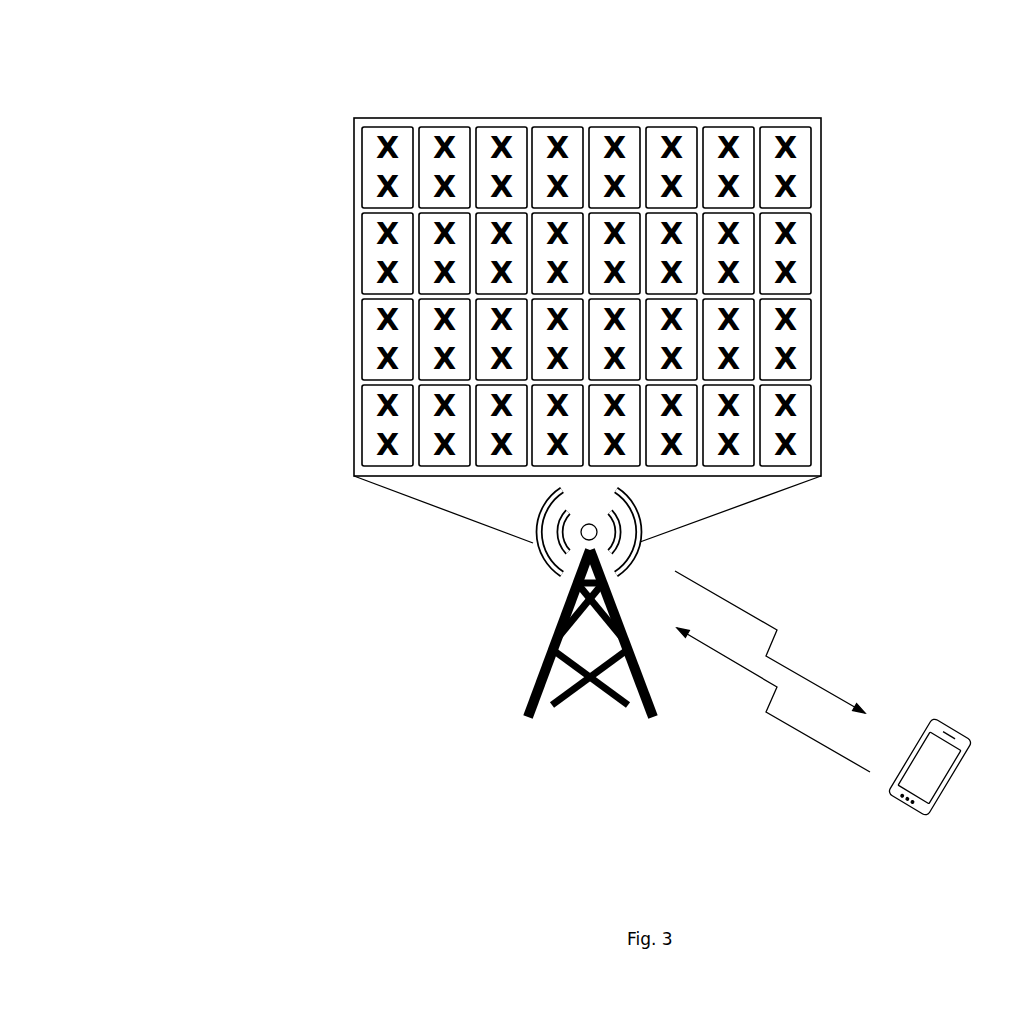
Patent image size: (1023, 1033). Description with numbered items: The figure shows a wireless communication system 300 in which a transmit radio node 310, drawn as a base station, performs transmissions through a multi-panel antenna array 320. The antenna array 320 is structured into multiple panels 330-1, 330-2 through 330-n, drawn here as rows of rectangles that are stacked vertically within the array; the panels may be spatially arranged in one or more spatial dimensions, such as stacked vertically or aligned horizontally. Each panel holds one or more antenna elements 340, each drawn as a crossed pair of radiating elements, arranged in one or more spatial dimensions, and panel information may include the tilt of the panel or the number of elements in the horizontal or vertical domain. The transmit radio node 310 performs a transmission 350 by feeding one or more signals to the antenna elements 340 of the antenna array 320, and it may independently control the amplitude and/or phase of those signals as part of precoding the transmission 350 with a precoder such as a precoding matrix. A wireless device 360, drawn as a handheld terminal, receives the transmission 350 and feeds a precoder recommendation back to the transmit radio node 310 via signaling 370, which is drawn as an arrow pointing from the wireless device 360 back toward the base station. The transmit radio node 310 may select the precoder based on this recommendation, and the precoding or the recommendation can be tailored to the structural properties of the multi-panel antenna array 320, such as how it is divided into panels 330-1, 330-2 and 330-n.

The wireless communication system 300 is at (73, 80).
The transmit radio node 310 is at (570, 608).
The multi-panel antenna array 320 is at (687, 118).
The panel 330-1 is at (589, 165).
The panel 330-2 is at (362, 258).
The panel 330-n is at (813, 435).
The antenna element 340 is at (798, 147).
The transmission 350 is at (732, 603).
The wireless device 360 is at (954, 769).
The signaling 370 is at (738, 663).